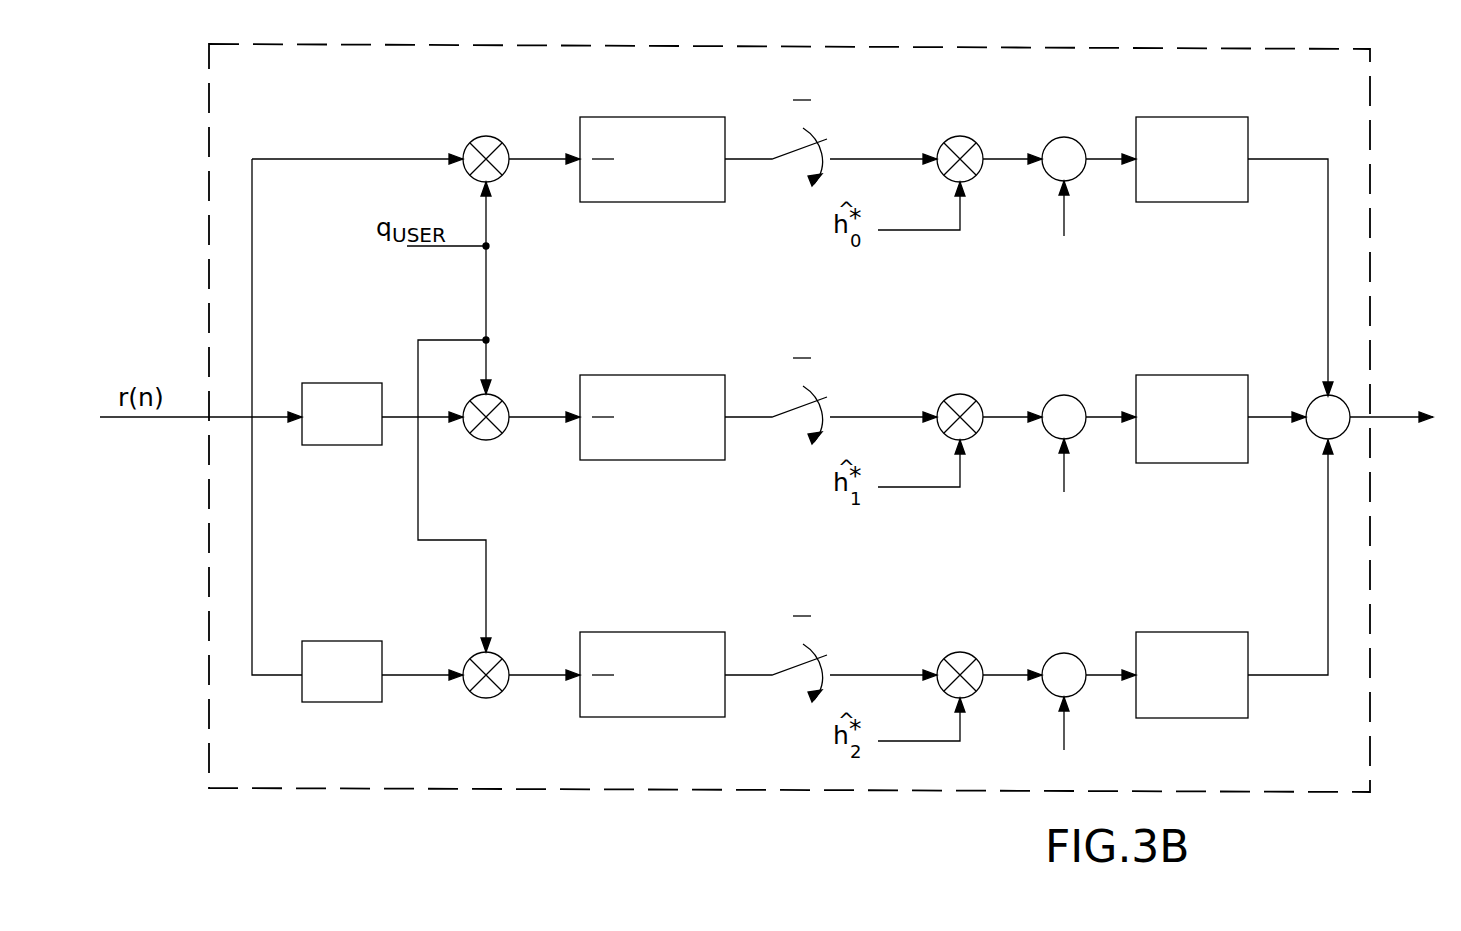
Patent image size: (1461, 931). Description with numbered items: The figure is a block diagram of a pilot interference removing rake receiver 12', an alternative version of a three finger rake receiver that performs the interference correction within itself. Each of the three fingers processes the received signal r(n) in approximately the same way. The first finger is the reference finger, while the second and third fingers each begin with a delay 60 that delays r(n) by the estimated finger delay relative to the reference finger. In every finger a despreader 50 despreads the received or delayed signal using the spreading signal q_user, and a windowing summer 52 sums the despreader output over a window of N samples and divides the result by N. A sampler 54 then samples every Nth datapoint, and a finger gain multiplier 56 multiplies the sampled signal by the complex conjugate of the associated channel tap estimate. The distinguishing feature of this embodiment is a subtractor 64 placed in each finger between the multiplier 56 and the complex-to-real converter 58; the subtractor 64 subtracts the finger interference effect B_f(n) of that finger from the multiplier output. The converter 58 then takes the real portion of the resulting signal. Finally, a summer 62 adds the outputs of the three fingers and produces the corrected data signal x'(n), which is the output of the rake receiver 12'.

The rake receiver 12' is at (826, 418).
The despreader 50 is at (484, 136).
The windowing summer 52 is at (650, 117).
The sampler 54 is at (830, 150).
The finger gain multiplier 56 is at (960, 136).
The complex-to-real converter 58 is at (1183, 117).
The delay 60 is at (355, 383).
The summer 62 is at (1310, 442).
The subtractor 64 is at (1064, 137).